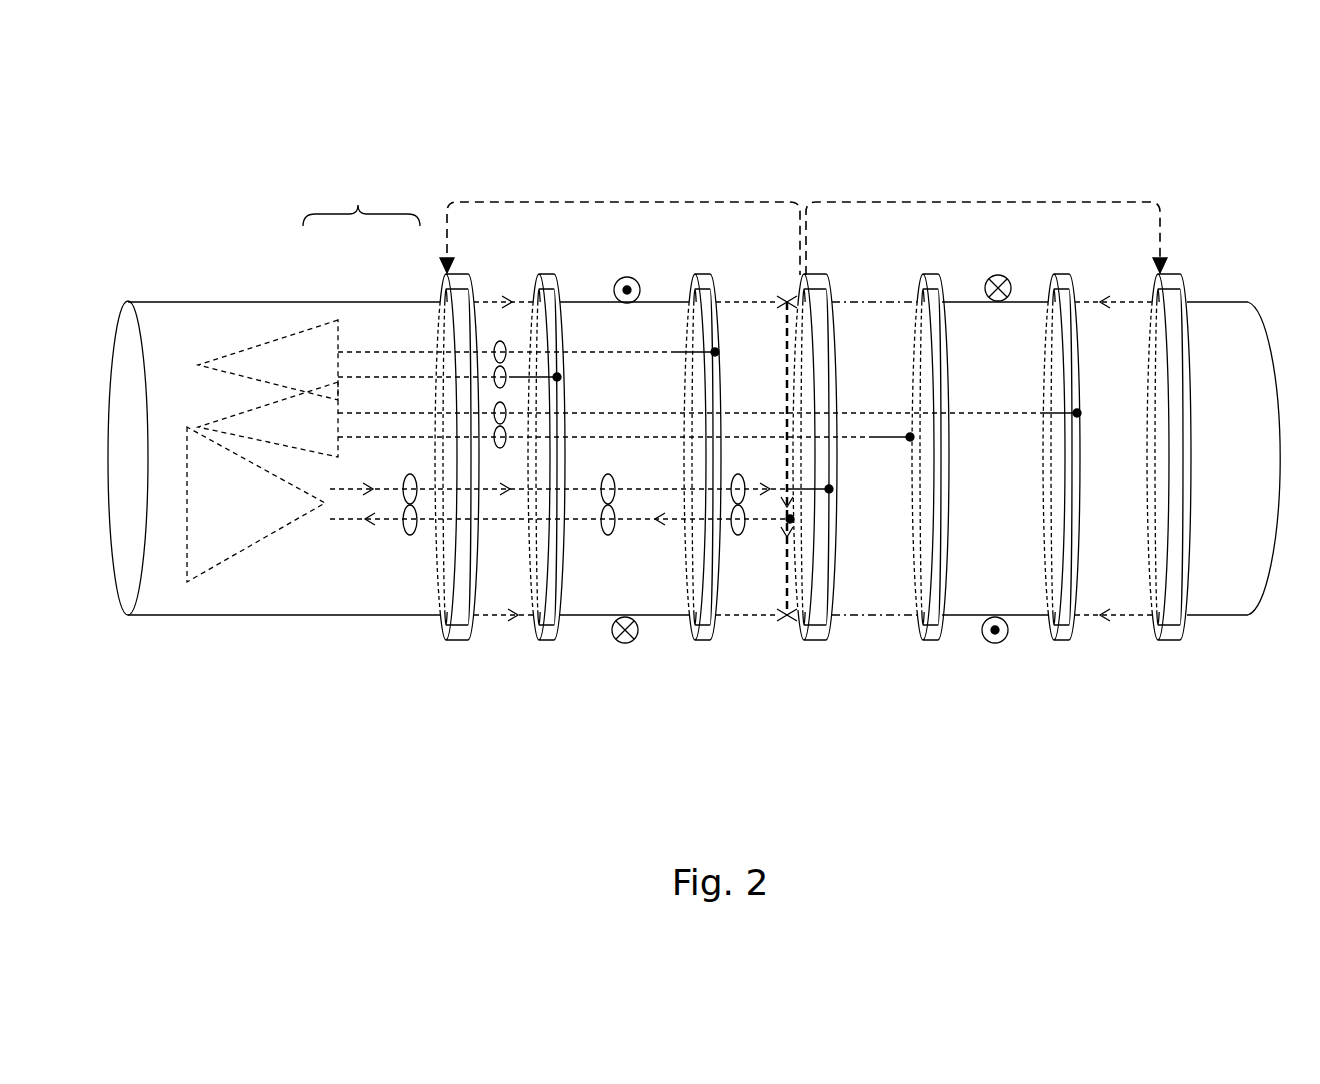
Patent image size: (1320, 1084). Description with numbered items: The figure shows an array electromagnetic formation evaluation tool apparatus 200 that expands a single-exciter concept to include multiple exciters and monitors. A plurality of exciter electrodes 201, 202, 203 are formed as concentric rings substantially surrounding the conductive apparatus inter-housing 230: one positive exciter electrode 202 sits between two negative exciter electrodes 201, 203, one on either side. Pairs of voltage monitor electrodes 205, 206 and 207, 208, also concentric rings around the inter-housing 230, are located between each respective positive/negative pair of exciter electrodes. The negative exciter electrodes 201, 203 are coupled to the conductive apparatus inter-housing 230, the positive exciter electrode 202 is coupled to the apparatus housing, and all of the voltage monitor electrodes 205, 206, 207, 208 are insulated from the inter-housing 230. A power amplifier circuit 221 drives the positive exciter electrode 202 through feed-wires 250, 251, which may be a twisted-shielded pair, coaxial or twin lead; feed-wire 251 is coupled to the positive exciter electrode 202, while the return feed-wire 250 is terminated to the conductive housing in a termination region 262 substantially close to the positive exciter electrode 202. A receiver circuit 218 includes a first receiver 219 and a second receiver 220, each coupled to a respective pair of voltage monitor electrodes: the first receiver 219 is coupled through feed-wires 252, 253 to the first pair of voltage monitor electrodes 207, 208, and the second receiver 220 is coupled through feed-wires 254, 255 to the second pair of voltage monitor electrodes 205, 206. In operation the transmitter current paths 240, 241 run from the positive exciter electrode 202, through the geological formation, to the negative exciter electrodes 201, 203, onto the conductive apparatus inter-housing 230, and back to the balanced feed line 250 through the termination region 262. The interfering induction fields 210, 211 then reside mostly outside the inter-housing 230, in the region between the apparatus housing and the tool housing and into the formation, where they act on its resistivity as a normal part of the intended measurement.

The array electromagnetic formation evaluation tool apparatus 200 is at (268, 156).
The negative exciter electrode 201 is at (458, 645).
The positive exciter electrode 202 is at (815, 645).
The negative exciter electrode 203 is at (1168, 645).
The voltage monitor electrode 205 is at (547, 645).
The voltage monitor electrode 206 is at (703, 645).
The voltage monitor electrode 207 is at (930, 645).
The voltage monitor electrode 208 is at (1063, 645).
The interfering induction field 210 is at (643, 280).
The interfering induction field 211 is at (982, 645).
The receiver circuit 218 is at (309, 320).
The first receiver 219 is at (345, 410).
The second receiver 220 is at (308, 322).
The power amplifier circuit 221 is at (197, 428).
The conductive apparatus inter-housing 230 is at (1218, 303).
The transmitter current path 240 is at (788, 203).
The transmitter current path 241 is at (1135, 203).
The return feed-wire 250 is at (668, 520).
The feed-wire 251 is at (663, 487).
The feed-wire 252 is at (877, 435).
The feed-wire 253 is at (858, 413).
The feed-wire 254 is at (508, 375).
The feed-wire 255 is at (642, 350).
The termination region 262 is at (788, 523).